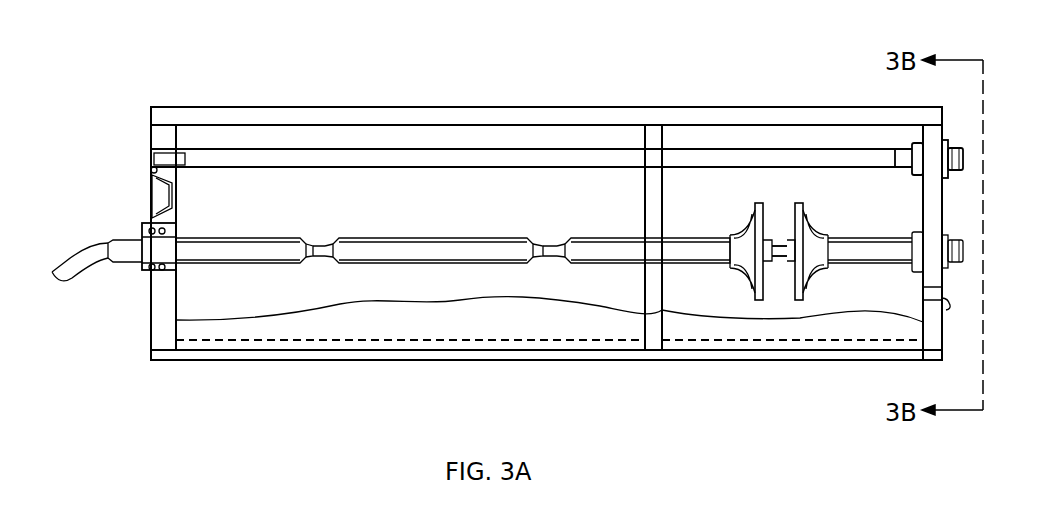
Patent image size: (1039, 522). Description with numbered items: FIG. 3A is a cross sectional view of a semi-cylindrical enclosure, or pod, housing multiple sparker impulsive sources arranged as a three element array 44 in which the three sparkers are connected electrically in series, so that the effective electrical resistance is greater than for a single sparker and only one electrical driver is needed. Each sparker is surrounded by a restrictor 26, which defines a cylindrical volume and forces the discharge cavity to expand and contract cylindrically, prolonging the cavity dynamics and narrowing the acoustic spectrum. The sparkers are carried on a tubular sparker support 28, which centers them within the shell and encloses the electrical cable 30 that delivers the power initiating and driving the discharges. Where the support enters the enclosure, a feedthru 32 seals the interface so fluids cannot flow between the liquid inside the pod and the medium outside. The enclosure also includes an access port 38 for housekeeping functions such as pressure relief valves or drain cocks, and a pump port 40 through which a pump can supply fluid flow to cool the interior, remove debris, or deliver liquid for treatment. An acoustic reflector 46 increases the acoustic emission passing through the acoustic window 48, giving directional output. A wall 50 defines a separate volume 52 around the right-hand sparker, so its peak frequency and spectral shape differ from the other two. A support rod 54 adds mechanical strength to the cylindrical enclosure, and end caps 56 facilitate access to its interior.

The restrictor 26 is at (745, 270).
The sparker support 28 is at (235, 265).
The electrical cable 30 is at (83, 262).
The feedthru 32 is at (145, 222).
The access port 38 is at (952, 306).
The pump port 40 is at (152, 170).
The three element sparker array 44 is at (318, 240).
The acoustic reflector 46 is at (548, 362).
The acoustic window 48 is at (262, 107).
The wall 50 is at (668, 130).
The separate volume 52 is at (783, 137).
The support rod 54 is at (335, 150).
The end cap 56 is at (942, 200).